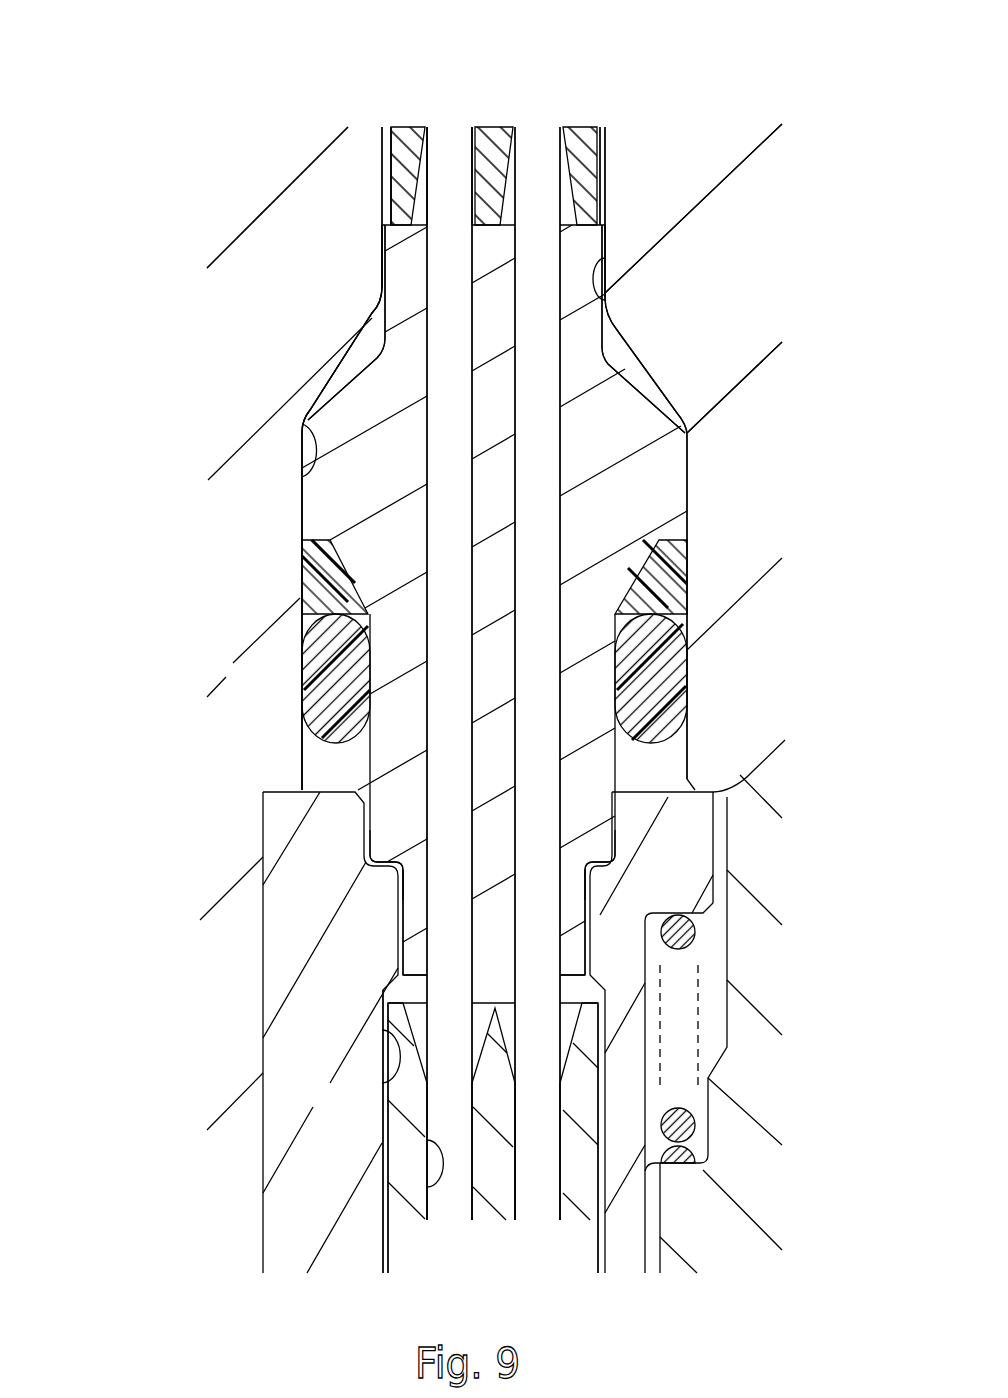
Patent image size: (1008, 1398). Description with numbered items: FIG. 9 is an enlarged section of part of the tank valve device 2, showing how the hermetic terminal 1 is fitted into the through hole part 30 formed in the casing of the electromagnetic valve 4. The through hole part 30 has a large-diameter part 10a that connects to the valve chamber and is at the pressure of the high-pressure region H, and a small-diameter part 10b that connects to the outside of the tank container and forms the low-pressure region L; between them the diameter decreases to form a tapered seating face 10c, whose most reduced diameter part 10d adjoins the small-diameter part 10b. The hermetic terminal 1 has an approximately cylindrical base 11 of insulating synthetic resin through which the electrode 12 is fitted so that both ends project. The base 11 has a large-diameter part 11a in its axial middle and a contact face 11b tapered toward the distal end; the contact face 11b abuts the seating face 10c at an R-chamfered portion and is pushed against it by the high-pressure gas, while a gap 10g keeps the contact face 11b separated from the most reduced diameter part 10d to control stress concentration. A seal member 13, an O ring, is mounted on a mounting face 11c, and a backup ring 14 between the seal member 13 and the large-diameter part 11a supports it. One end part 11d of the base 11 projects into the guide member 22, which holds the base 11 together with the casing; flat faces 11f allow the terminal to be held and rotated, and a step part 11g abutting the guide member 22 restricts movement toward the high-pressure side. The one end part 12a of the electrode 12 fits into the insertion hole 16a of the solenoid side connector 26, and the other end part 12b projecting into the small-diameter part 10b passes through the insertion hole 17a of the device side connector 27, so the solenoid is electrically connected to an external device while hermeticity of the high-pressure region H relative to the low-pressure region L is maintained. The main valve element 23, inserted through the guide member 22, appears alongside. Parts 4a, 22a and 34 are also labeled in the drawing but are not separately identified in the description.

The hermetic terminal 1 is at (342, 312).
The electromagnetic valve 4 is at (744, 107).
The tank valve device 2 is at (494, 278).
The housing portion 4a is at (218, 300).
The large-diameter part 10a is at (300, 423).
The small-diameter part 10b is at (383, 163).
The seating face 10c is at (623, 345).
The most reduced diameter part 10d is at (605, 260).
The gap 10g is at (623, 343).
The through hole part 30 is at (349, 273).
The base 11 is at (317, 510).
The large-diameter part 11a is at (670, 491).
The contact face 11b is at (647, 390).
The mounting face 11c is at (301, 760).
The one end part 11d is at (415, 888).
The flat faces 11f is at (402, 932).
The step part 11g is at (612, 864).
The electrode 12 is at (455, 540).
The one end part 12a is at (537, 1212).
The other end part 12b is at (402, 130).
The seal member 13 is at (310, 680).
The backup ring 14 is at (300, 563).
The insertion hole 16a is at (515, 1183).
The insertion hole 17a is at (437, 135).
The guide member 22 is at (295, 1207).
The cap inner wall 22a is at (382, 1030).
The main valve element 23 is at (768, 1098).
The solenoid side connector 26 is at (400, 1248).
The device side connector 27 is at (580, 140).
The balls 34 is at (687, 1132).
The low-pressure region L is at (603, 217).
The high-pressure region H is at (412, 993).